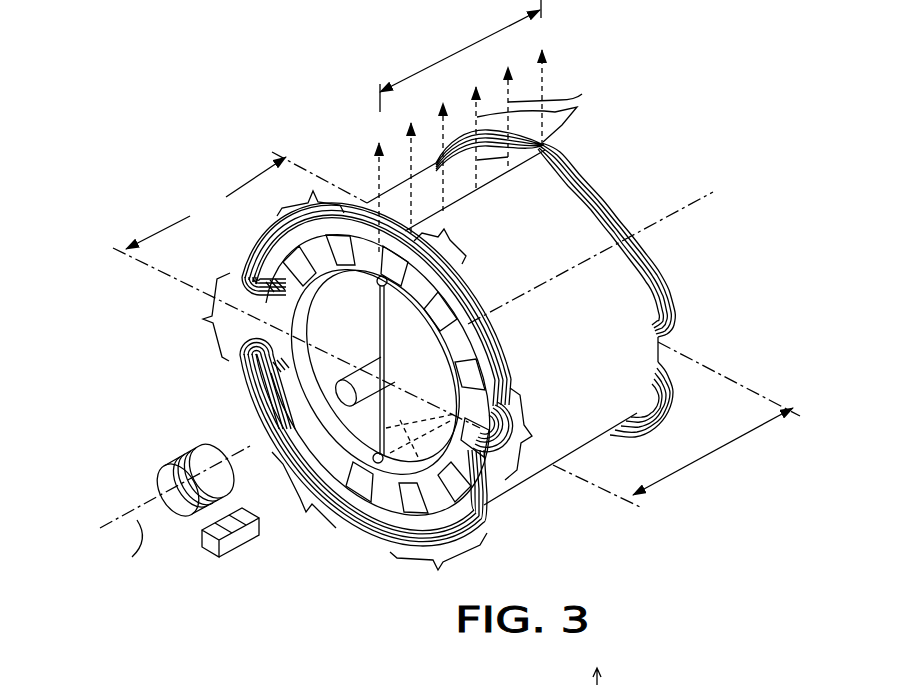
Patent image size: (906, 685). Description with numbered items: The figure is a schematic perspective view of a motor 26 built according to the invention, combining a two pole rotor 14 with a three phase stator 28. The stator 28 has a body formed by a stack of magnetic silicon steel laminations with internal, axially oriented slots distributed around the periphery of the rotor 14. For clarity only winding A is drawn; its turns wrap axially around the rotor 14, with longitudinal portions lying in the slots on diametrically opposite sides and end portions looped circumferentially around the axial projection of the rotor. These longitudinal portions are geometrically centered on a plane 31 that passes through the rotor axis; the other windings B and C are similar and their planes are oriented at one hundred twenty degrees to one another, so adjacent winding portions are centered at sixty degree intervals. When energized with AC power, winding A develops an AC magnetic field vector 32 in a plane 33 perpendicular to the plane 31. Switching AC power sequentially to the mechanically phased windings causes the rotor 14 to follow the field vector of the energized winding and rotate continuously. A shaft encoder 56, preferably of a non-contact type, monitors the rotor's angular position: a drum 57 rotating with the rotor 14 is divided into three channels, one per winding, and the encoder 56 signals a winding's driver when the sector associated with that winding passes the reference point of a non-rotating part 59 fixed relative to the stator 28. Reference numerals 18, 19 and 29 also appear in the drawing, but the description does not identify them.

The two pole rotor 14 is at (322, 320).
The stator windings 18 is at (366, 203).
The rotor 19 is at (365, 417).
The motor 26 is at (708, 357).
The three phase stator 28 is at (650, 294).
The axis 29 is at (127, 562).
The plane of the winding 31 is at (453, 329).
The AC magnetic field vector 32 is at (545, 122).
The plane of the field vector 33 is at (460, 126).
The shaft encoder 56 is at (183, 537).
The drum 57 is at (158, 470).
The non-rotating part 59 is at (207, 552).